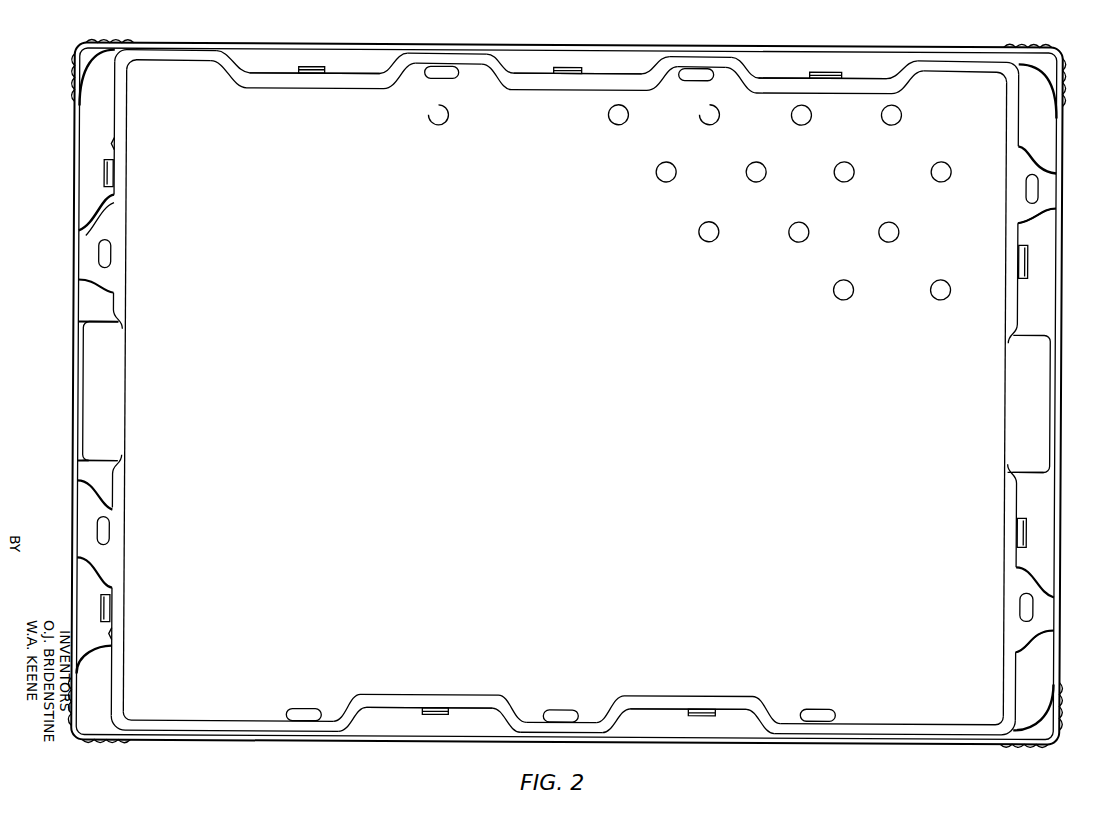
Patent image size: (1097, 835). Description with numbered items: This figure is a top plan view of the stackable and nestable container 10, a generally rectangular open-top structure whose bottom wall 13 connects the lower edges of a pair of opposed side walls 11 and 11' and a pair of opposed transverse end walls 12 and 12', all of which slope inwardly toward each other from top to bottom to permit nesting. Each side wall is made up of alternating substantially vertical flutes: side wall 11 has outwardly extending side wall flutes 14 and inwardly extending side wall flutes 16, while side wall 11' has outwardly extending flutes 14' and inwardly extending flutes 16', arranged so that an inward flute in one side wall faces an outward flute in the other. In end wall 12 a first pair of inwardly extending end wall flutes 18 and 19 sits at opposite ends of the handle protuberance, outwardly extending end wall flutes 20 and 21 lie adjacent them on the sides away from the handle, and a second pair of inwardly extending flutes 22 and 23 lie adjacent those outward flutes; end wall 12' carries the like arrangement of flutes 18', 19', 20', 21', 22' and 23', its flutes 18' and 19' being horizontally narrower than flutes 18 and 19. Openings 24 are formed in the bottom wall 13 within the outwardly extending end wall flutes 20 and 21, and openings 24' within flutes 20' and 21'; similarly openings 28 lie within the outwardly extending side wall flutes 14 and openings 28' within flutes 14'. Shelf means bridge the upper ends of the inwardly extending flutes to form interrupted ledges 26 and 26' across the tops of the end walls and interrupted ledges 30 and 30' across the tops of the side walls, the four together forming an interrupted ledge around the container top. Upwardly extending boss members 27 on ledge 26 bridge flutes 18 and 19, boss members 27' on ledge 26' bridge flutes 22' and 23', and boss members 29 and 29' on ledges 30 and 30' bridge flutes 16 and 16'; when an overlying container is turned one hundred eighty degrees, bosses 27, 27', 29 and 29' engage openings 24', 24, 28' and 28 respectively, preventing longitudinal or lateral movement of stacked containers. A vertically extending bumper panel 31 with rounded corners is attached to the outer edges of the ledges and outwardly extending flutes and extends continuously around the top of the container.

The container 10 is at (66, 193).
The side wall 11 is at (554, 141).
The side wall 11' is at (526, 648).
The end wall 12 is at (954, 397).
The end wall 12' is at (175, 389).
The bottom wall 13 is at (781, 265).
The outwardly extending side wall flute 14 is at (566, 84).
The outwardly extending side wall flute 14' is at (563, 718).
The inwardly extending side wall flute 16 is at (566, 86).
The inwardly extending side wall flute 16' is at (556, 705).
The inwardly extending end wall flute 18 is at (1011, 381).
The inwardly extending end wall flute 18' is at (126, 381).
The inwardly extending end wall flute 19 is at (999, 484).
The inwardly extending end wall flute 19' is at (125, 475).
The outwardly extending end wall flute 20 is at (1019, 198).
The outwardly extending end wall flute 20' is at (112, 216).
The outwardly extending end wall flute 21 is at (1018, 584).
The outwardly extending end wall flute 21' is at (112, 533).
The inwardly extending end wall flute 22 is at (1016, 154).
The inwardly extending end wall flute 22' is at (140, 148).
The inwardly extending end wall flute 23 is at (1010, 646).
The inwardly extending end wall flute 23' is at (134, 628).
The opening 24 is at (1009, 405).
The opening 24' is at (125, 395).
The interrupted ledge 26 is at (1035, 397).
The interrupted ledge 26' is at (98, 361).
The boss member 27 is at (997, 389).
The boss member 27' is at (73, 398).
The opening 28 is at (551, 92).
The opening 28' is at (579, 705).
The boss member 29 is at (584, 65).
The boss member 29' is at (586, 722).
The interrupted ledge 30 is at (568, 64).
The interrupted ledge 30' is at (556, 721).
The bumper panel 31 is at (574, 46).